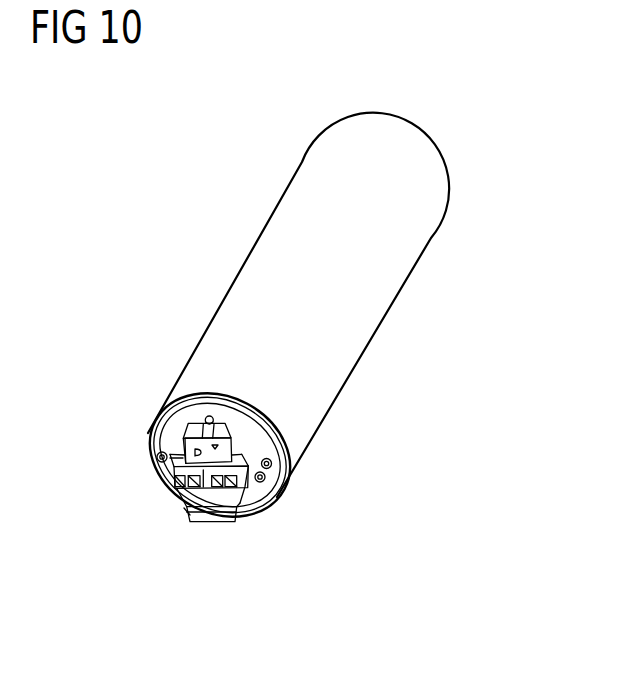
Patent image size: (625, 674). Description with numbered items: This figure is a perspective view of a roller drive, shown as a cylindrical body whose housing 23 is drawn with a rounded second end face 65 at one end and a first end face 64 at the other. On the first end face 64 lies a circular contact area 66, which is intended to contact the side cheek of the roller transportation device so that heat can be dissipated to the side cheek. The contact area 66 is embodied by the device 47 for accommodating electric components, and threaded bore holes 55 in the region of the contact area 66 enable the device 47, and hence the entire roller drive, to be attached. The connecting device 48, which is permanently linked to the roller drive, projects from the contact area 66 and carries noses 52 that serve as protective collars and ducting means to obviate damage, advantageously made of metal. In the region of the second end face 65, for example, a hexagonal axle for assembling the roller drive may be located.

The second end face 65 is at (404, 108).
The cylindrical housing 23 is at (391, 279).
The contact area 66 is at (178, 409).
The device for accommodating electric components 47 is at (226, 411).
The connecting device 48 is at (208, 498).
The noses 52 is at (165, 433).
The threaded bore holes 55 is at (157, 462).
The first end face 64 is at (181, 551).